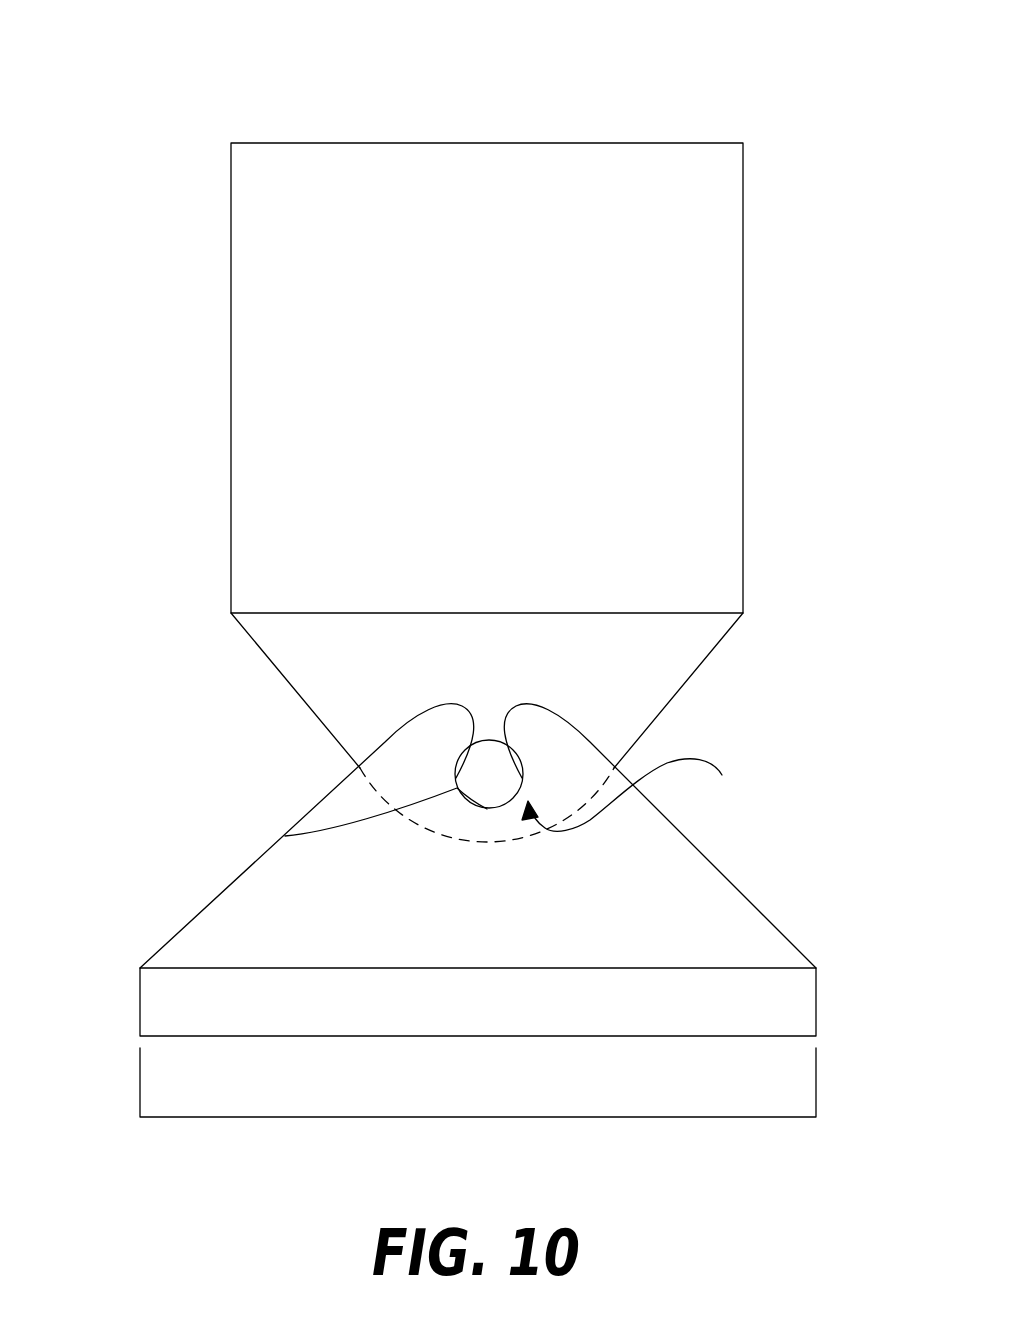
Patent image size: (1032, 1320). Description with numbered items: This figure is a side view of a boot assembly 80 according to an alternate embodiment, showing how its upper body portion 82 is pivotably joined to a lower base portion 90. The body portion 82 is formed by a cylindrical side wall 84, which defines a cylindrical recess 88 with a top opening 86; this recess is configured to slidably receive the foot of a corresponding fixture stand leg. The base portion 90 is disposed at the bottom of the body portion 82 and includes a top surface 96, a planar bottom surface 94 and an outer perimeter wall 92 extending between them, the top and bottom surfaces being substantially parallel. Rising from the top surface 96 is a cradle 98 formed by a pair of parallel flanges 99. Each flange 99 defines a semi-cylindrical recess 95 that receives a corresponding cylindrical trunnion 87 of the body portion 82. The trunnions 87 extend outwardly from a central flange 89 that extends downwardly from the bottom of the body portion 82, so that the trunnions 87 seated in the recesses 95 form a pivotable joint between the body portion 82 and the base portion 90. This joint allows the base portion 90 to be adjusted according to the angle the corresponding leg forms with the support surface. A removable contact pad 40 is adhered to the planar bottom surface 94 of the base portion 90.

The removable contact pad 40 is at (500, 1117).
The boot assembly 80 is at (75, 148).
The body portion 82 is at (185, 420).
The cylindrical side wall 84 is at (638, 343).
The top opening 86 is at (697, 143).
The cylindrical trunnion 87 is at (500, 760).
The cylindrical recess 88 is at (499, 103).
The central flange 89 is at (343, 650).
The base portion 90 is at (132, 858).
The outer perimeter wall 92 is at (818, 1007).
The planar bottom surface 94 is at (290, 1037).
The semi-cylindrical recess 95 is at (285, 836).
The top surface 96 is at (228, 967).
The cradle 98 is at (637, 795).
The parallel flange 99 is at (653, 875).